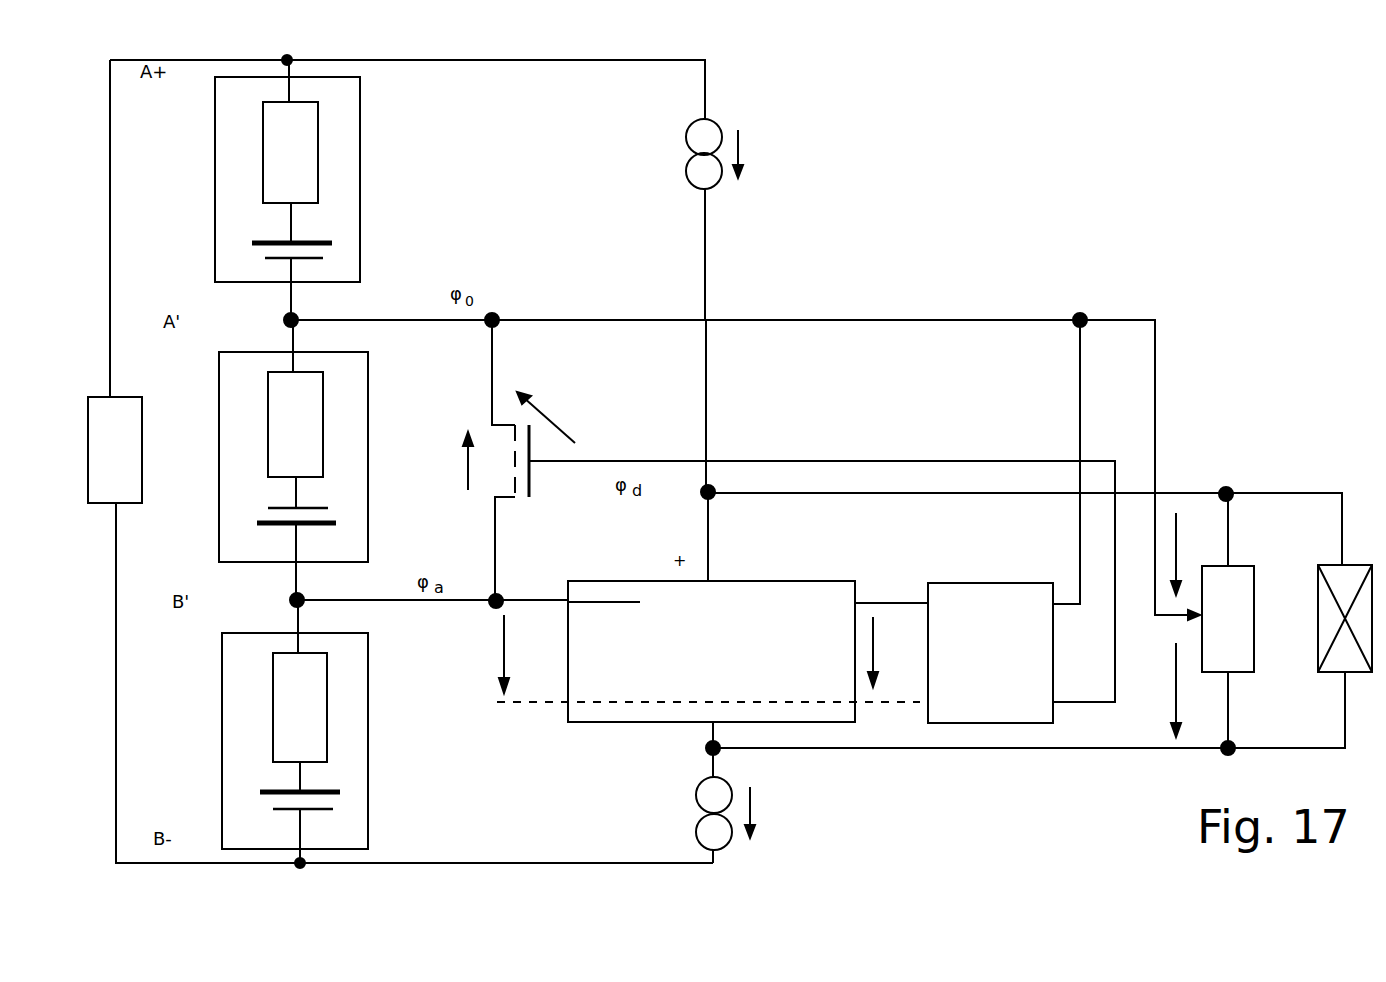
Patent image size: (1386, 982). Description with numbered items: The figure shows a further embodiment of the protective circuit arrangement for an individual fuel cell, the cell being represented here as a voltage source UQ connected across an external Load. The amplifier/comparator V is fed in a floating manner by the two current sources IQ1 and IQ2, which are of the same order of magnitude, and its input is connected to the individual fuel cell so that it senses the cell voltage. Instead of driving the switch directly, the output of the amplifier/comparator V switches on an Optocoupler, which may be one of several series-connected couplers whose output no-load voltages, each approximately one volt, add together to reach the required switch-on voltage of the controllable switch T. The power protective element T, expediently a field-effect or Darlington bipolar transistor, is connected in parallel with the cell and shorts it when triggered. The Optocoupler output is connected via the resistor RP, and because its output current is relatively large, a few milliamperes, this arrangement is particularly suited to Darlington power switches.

The load Load is at (130, 474).
The voltage source with internal resistance UQ is at (268, 461).
The power protective element T is at (759, 511).
The current source IQ1 is at (728, 190).
The current source IQ2 is at (741, 813).
The amplifier/comparator V is at (690, 674).
The optocoupler Optocoupler is at (966, 571).
The resistor RP and indicator RP is at (1271, 624).